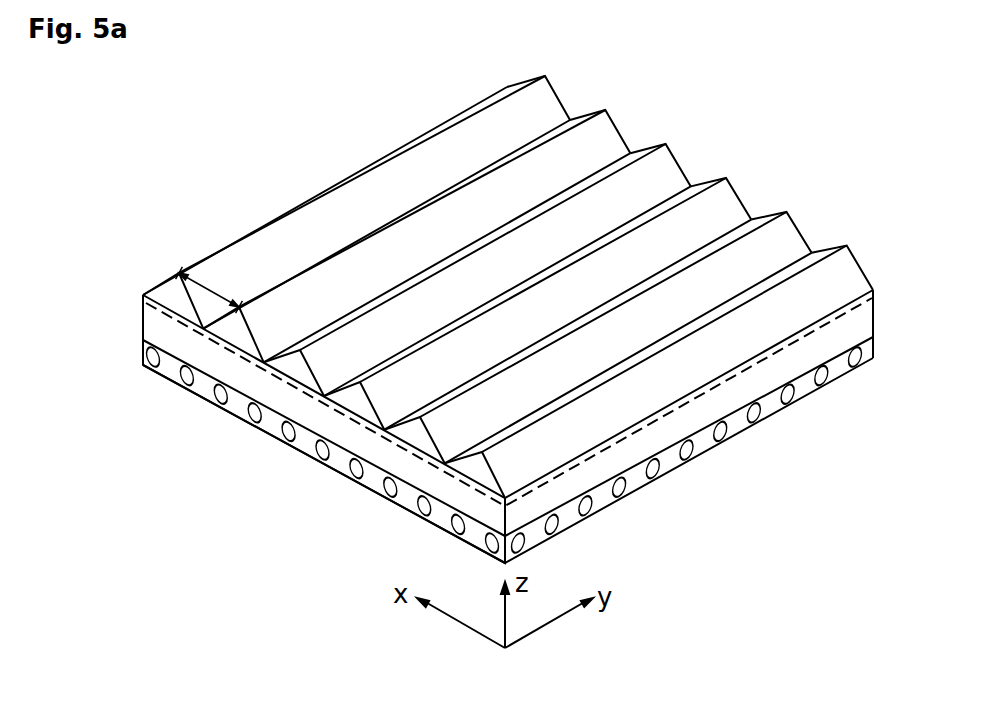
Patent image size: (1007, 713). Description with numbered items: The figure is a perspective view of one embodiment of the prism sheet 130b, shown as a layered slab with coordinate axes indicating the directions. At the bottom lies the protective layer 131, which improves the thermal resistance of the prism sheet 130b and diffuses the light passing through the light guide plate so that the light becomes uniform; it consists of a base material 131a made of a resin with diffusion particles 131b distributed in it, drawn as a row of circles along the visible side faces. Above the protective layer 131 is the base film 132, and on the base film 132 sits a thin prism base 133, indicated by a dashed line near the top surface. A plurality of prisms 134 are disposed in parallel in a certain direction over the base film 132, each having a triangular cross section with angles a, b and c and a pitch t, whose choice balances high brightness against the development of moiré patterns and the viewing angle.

The prism sheet 130b is at (790, 104).
The prisms 134 is at (396, 166).
The prism base 133 is at (143, 297).
The base film 132 is at (143, 328).
The protective layer 131 is at (143, 357).
The base material 131a is at (204, 392).
The diffusion particles 131b is at (186, 383).